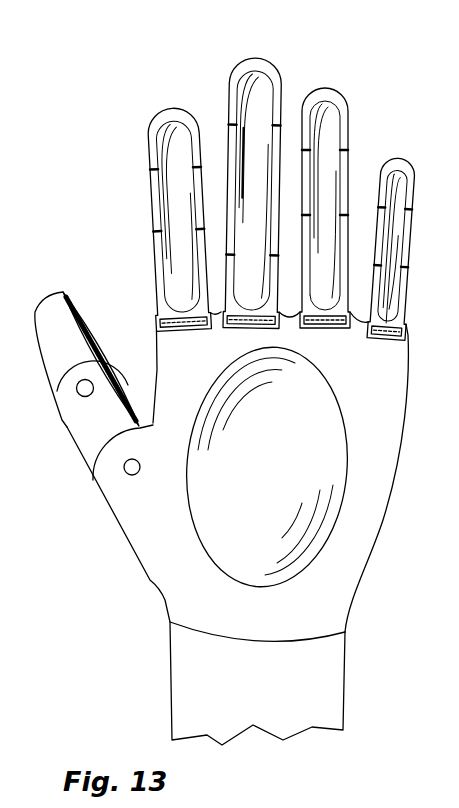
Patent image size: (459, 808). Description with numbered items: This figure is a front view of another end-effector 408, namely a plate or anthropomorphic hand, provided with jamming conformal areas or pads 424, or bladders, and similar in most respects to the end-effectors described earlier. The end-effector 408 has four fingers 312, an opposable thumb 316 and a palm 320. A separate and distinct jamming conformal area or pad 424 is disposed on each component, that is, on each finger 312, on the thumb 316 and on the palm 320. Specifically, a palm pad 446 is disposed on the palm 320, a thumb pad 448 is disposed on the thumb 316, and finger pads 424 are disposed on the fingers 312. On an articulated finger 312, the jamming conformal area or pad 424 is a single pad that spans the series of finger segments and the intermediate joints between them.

The fingers 312 is at (147, 150).
The jamming conformal areas or pads 424 is at (167, 197).
The thumb pad 448 is at (106, 348).
The opposable thumb 316 is at (97, 434).
The palm 320 is at (367, 502).
The palm pad 446 is at (292, 522).
The end-effector 408 is at (143, 595).